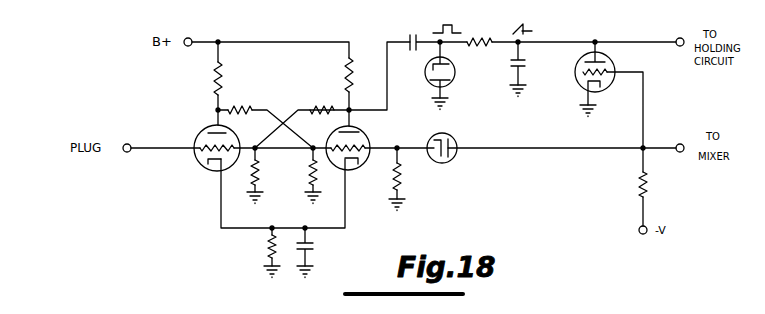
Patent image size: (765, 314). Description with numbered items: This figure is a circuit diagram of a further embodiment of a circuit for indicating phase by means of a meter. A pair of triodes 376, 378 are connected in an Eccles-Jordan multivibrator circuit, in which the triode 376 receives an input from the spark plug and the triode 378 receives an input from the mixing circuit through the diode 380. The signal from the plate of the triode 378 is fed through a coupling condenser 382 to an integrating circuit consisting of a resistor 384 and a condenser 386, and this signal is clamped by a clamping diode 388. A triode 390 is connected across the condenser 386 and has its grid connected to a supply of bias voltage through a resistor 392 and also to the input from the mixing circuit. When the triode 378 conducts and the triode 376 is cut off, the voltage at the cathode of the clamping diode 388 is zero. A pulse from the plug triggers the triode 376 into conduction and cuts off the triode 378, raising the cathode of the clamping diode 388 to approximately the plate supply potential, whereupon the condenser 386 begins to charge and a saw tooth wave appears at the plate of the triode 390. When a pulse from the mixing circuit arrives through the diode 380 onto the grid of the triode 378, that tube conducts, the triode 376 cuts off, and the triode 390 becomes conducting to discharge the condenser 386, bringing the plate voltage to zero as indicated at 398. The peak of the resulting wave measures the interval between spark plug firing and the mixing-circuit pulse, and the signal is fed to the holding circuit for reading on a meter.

The triode 376 is at (203, 169).
The triode 378 is at (354, 172).
The diode 380 is at (441, 163).
The coupling condenser 382 is at (422, 20).
The resistor 384 is at (486, 37).
The condenser 386 is at (527, 64).
The clamping diode 388 is at (453, 84).
The triode 390 is at (614, 65).
The resistor 392 is at (637, 190).
The zero voltage point 398 is at (532, 31).